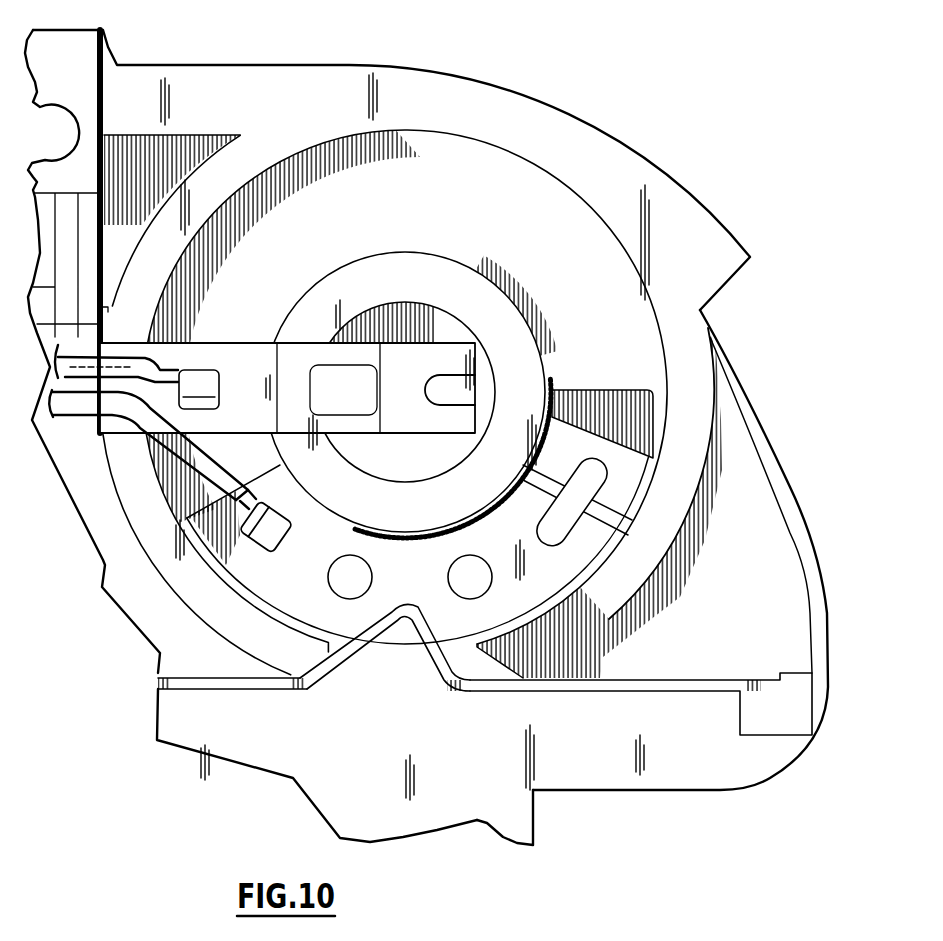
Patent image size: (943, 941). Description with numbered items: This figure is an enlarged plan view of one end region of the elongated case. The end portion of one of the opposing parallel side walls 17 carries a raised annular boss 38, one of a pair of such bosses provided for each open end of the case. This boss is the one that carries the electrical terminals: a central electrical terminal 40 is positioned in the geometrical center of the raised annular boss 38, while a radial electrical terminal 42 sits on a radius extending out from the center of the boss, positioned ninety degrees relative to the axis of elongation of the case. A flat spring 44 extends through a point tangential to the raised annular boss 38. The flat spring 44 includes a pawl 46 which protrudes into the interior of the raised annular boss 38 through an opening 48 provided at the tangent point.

The side wall 17 is at (503, 813).
The raised annular boss 38 is at (517, 120).
The central electrical terminal 40 is at (415, 360).
The radial electrical terminal 42 is at (600, 415).
The flat spring 44 is at (682, 678).
The pawl 46 is at (353, 667).
The opening 48 is at (466, 666).